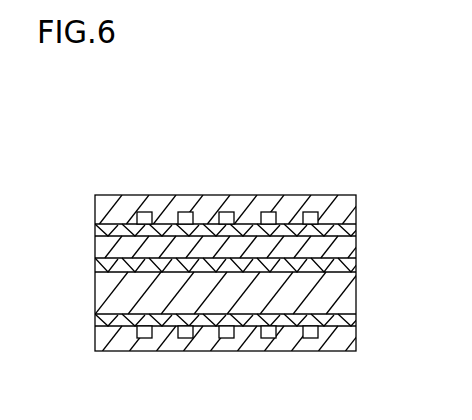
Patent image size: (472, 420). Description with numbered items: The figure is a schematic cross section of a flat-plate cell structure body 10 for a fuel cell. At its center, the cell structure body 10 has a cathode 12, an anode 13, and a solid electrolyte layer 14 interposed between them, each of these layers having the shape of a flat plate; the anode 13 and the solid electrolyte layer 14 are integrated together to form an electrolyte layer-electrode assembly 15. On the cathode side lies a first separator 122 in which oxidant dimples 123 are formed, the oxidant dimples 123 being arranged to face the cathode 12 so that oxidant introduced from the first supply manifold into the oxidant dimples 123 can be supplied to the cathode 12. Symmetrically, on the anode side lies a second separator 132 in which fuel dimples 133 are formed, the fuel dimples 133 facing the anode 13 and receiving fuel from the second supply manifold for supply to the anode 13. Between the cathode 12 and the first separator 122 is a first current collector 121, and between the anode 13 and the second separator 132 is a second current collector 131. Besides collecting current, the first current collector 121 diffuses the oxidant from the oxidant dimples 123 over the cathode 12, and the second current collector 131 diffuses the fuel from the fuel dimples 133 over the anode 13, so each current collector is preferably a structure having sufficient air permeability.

The cell structure body 10 is at (362, 176).
The first separator 122 is at (245, 193).
The first current collector 121 is at (270, 211).
The oxidant dimples 123 is at (187, 211).
The cathode 12 is at (343, 243).
The solid electrolyte layer 14 is at (340, 263).
The anode 13 is at (412, 257).
The electrolyte layer-electrode assembly 15 is at (257, 287).
The second separator 132 is at (244, 356).
The second current collector 131 is at (139, 339).
The fuel dimples 133 is at (225, 339).